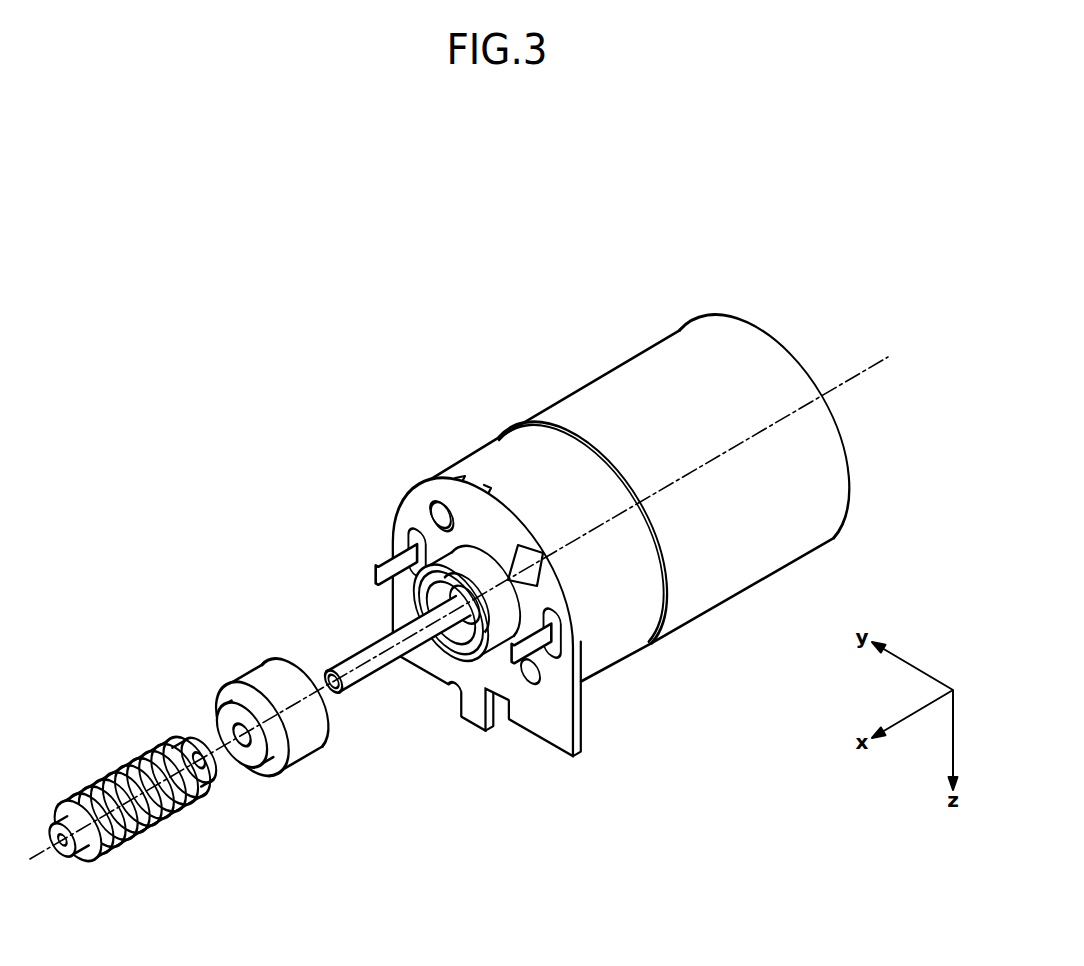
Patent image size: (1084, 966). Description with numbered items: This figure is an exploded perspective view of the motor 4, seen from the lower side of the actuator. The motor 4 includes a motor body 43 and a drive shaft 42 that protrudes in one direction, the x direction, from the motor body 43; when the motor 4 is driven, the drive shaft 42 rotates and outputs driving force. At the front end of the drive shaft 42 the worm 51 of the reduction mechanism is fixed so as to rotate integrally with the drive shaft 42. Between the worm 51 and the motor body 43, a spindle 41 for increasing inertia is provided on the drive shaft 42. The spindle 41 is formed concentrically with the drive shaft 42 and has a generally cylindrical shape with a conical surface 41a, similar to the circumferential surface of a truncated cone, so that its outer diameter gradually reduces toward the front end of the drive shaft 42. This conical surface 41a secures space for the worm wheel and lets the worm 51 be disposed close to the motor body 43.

The motor 4 is at (613, 494).
The spindle 41 is at (272, 705).
The conical surface 41a is at (277, 757).
The drive shaft 42 is at (357, 655).
The motor body 43 is at (724, 582).
The worm 51 is at (107, 760).